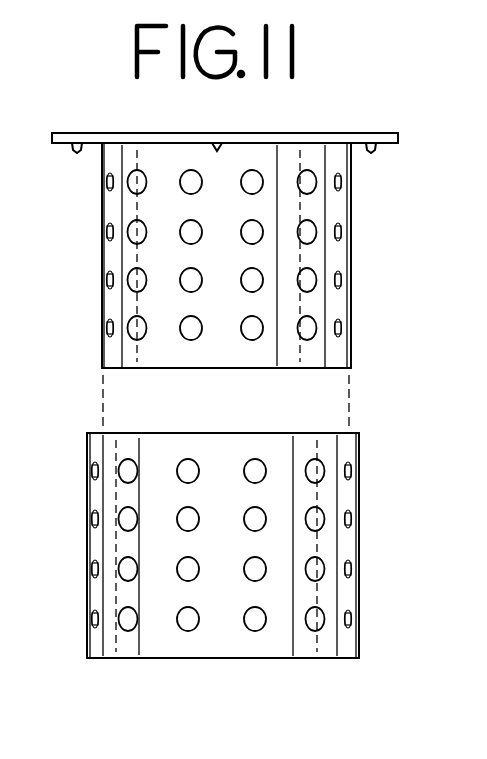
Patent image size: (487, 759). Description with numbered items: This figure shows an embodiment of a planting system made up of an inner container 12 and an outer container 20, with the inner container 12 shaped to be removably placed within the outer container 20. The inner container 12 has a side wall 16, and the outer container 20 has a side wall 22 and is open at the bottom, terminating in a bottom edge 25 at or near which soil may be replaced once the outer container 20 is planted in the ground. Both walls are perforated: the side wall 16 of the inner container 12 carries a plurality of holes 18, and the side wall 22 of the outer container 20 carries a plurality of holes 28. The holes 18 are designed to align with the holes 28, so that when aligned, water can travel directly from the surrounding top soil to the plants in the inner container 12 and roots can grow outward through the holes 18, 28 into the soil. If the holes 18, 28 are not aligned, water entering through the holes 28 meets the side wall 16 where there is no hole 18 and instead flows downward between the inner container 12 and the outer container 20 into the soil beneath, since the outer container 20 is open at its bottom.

The inner container 12 is at (100, 208).
The side wall 16 is at (328, 253).
The holes 18 is at (340, 226).
The outer container 20 is at (90, 463).
The side wall 22 is at (327, 497).
The bottom edge 25 is at (335, 658).
The holes 28 is at (108, 328).